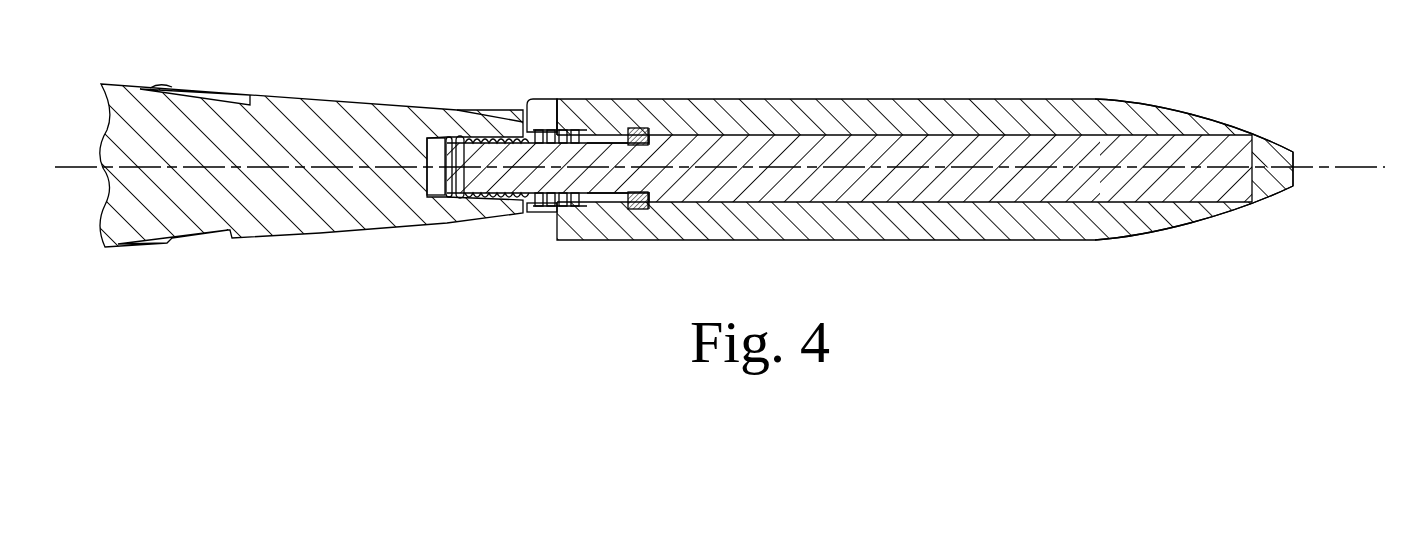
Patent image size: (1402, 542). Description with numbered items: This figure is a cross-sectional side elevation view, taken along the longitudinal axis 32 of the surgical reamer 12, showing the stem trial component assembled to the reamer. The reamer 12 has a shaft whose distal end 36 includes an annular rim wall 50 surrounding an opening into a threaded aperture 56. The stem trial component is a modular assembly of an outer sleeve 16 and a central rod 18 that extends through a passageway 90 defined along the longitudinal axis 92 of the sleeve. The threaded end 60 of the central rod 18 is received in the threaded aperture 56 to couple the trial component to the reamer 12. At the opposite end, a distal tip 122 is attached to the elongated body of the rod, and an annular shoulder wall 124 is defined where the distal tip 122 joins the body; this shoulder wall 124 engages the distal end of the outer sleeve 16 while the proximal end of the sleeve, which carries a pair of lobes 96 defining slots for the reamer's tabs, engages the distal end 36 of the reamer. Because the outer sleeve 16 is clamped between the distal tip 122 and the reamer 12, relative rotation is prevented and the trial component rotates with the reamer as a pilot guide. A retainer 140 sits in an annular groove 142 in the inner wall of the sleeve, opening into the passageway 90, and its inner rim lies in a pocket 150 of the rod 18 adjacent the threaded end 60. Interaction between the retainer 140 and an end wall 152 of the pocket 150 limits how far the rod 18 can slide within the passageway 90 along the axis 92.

The surgical reamer 12 is at (333, 100).
The outer sleeve 16 is at (835, 101).
The central rod 18 is at (760, 186).
The longitudinal axis 32 is at (1350, 151).
The longitudinal axis 92 is at (1194, 213).
The distal end 36 is at (520, 112).
The annular rim wall 50 is at (545, 106).
The aperture 56 is at (445, 205).
The threaded end 60 is at (499, 205).
The passageway 90 is at (937, 241).
The lobes 96 is at (542, 110).
The distal tip 122 is at (1270, 188).
The annular shoulder wall 124 is at (1246, 205).
The retainer 140 is at (650, 128).
The annular groove 142 is at (636, 128).
The pocket 150 is at (602, 120).
The end wall 152 is at (548, 213).